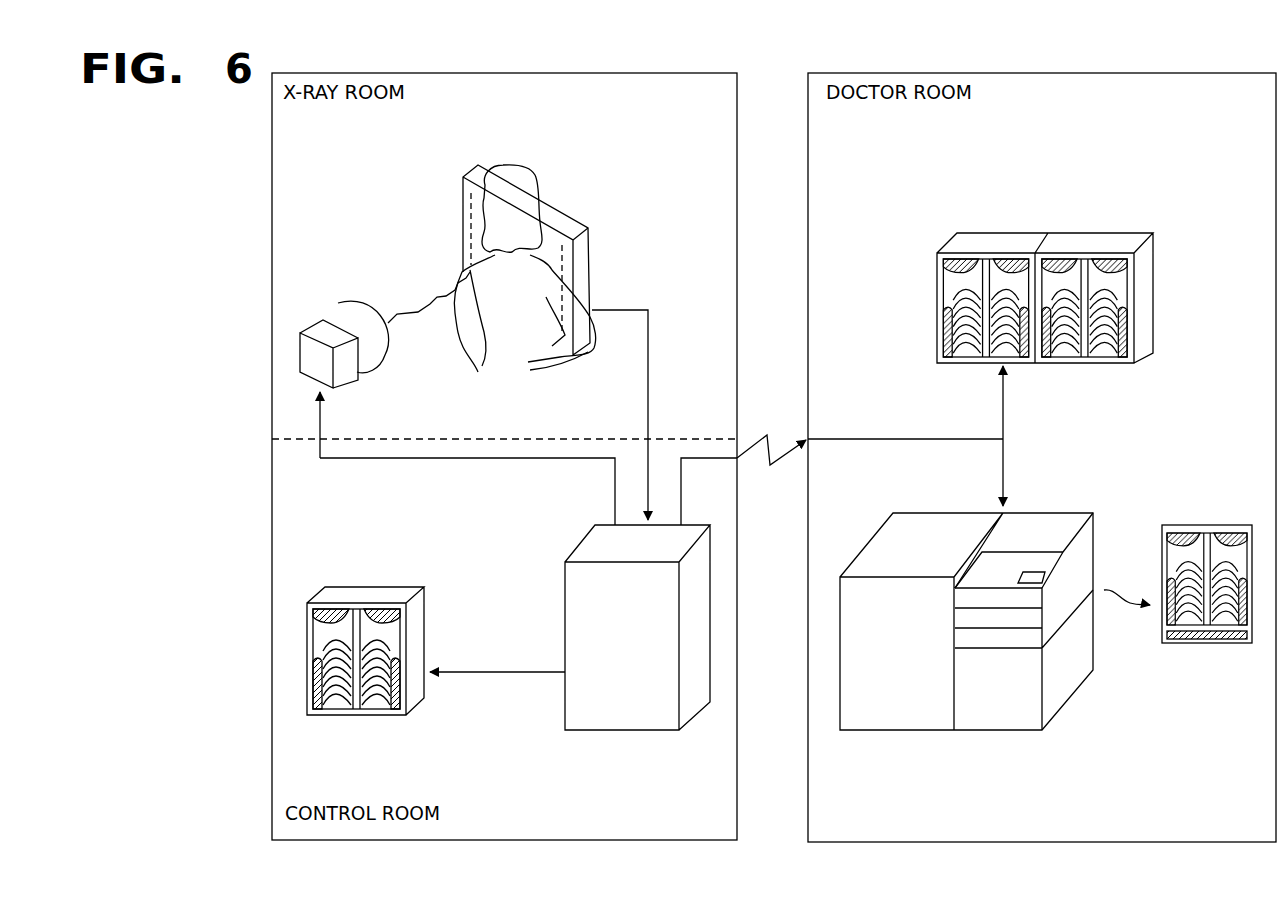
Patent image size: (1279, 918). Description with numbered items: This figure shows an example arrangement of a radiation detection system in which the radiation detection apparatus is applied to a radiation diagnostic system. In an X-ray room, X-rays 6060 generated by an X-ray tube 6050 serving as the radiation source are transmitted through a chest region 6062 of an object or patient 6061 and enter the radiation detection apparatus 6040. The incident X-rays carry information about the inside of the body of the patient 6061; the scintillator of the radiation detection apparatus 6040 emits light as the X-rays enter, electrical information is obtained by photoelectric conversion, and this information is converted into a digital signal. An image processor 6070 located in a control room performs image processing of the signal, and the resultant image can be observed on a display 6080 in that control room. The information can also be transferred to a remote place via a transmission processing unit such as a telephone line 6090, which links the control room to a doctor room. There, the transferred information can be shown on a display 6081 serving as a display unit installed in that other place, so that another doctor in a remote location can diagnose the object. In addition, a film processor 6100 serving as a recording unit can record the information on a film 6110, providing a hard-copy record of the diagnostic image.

The radiation detection apparatus 6040 is at (560, 228).
The X-ray tube 6050 is at (312, 322).
The X-rays 6060 is at (417, 300).
The patient 6061 is at (518, 170).
The chest region 6062 is at (514, 332).
The image processor 6070 is at (565, 700).
The display 6080 is at (428, 622).
The display 6081 is at (968, 238).
The telephone line 6090 is at (772, 440).
The film processor 6100 is at (932, 512).
The film 6110 is at (1207, 525).